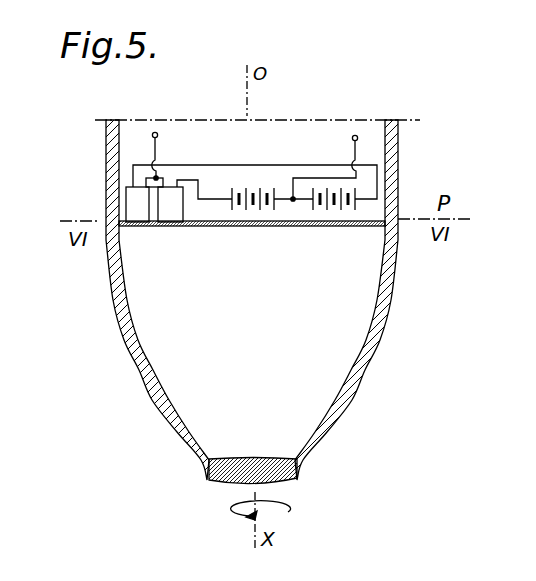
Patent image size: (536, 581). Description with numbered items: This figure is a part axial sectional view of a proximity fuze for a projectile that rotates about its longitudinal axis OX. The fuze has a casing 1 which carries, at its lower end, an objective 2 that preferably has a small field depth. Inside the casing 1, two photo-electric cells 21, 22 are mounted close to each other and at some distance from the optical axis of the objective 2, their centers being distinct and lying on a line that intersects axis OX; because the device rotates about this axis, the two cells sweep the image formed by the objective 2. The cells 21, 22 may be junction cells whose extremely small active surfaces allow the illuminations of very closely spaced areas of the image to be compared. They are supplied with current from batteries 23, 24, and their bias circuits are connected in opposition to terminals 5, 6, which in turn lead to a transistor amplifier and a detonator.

The casing 1 is at (113, 299).
The objective 2 is at (264, 466).
The terminal 5 is at (358, 137).
The terminal 6 is at (152, 134).
The photo-electric cell 21 is at (166, 207).
The photo-electric cell 22 is at (136, 201).
The battery 23 is at (332, 210).
The battery 24 is at (250, 210).